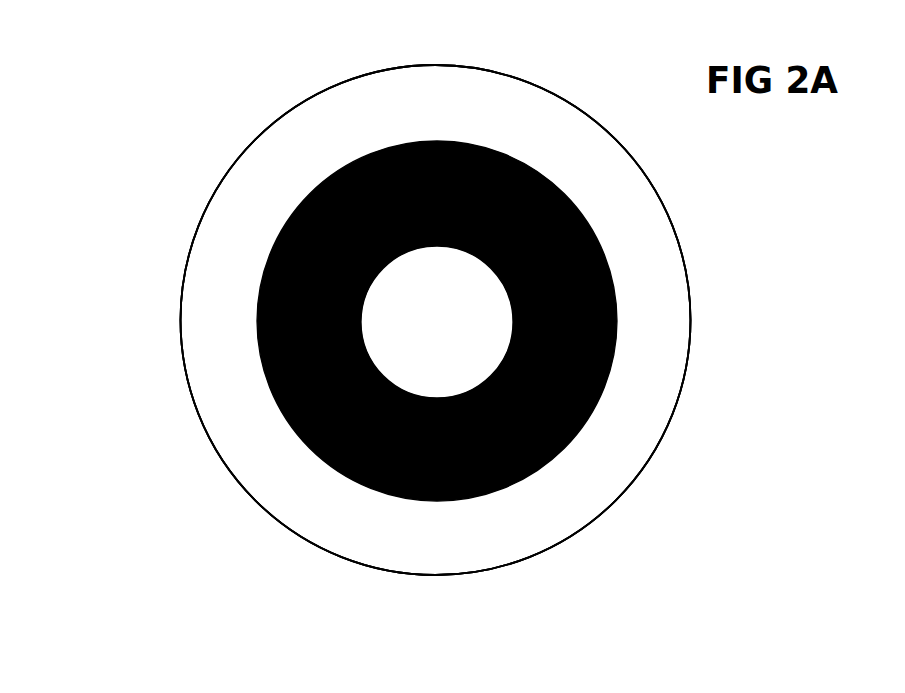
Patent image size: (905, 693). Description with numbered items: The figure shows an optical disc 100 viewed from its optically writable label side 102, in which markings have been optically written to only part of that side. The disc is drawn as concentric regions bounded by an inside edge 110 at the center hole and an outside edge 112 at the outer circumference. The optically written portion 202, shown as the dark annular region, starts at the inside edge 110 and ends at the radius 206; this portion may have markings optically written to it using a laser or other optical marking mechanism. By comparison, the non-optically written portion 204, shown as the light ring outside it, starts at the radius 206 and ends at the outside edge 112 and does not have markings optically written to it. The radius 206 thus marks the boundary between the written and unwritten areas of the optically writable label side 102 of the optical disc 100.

The optical disc 100 is at (107, 123).
The optically writable label side 102 is at (256, 127).
The outside edge 112 is at (270, 508).
The optically written portion 202 is at (445, 164).
The non-optically written portion 204 is at (677, 324).
The radius 206 is at (570, 426).
The inside edge 110 is at (503, 320).